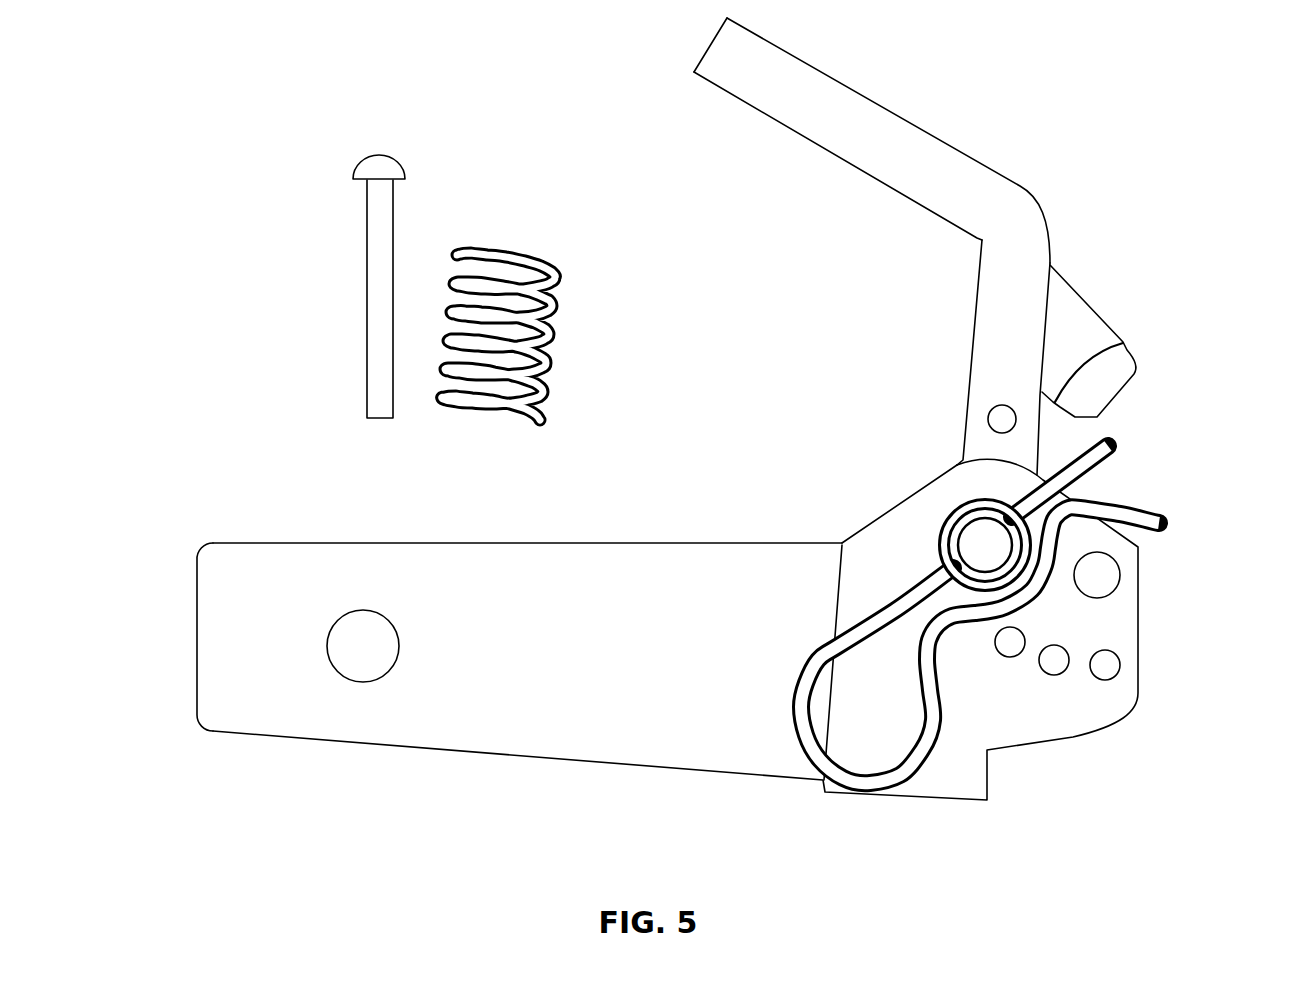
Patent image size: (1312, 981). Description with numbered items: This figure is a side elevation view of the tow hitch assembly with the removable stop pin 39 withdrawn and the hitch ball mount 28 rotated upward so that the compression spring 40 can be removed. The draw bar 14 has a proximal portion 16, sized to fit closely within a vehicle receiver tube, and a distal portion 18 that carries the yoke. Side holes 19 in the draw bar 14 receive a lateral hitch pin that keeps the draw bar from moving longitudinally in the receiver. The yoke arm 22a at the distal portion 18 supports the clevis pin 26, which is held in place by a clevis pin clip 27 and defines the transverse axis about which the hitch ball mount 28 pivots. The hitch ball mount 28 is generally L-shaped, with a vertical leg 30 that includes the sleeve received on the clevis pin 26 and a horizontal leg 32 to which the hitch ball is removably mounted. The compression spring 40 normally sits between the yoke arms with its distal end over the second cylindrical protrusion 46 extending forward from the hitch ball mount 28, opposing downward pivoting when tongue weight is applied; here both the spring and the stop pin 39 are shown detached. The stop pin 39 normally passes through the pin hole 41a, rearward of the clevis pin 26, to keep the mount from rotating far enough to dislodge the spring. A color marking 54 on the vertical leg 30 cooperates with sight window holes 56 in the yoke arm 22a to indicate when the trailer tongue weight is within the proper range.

The draw bar 14 is at (567, 712).
The proximal portion 16 is at (233, 572).
The distal portion 18 is at (838, 585).
The side holes 19 is at (353, 662).
The yoke arm 22a is at (870, 553).
The clevis pin 26 is at (985, 545).
The clevis pin clip 27 is at (878, 787).
The hitch ball mount 28 is at (968, 183).
The vertical leg 30 is at (1012, 325).
The horizontal leg 32 is at (725, 63).
The removable stop pin 39 is at (385, 215).
The compression spring 40 is at (502, 302).
The pin hole 41a is at (1120, 577).
The second cylindrical protrusion 46 is at (1118, 362).
The color marking 54 is at (1000, 418).
The sight window holes 56 is at (1010, 648).